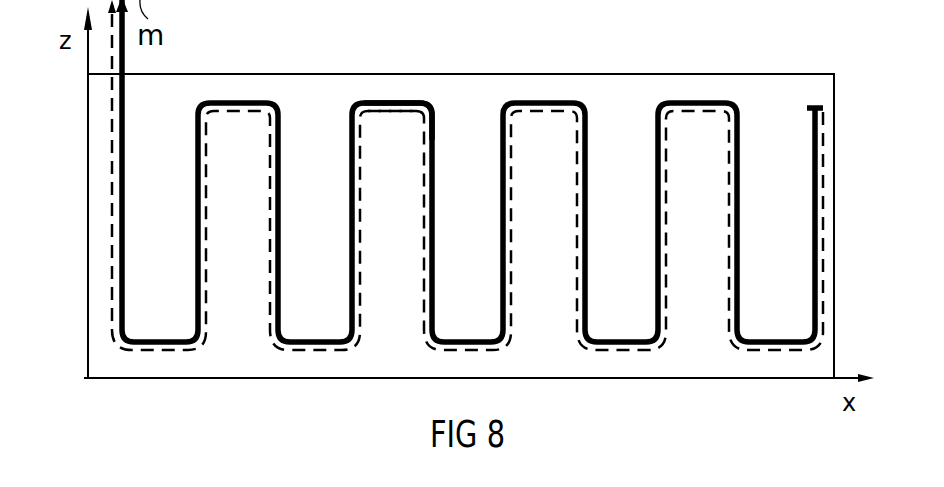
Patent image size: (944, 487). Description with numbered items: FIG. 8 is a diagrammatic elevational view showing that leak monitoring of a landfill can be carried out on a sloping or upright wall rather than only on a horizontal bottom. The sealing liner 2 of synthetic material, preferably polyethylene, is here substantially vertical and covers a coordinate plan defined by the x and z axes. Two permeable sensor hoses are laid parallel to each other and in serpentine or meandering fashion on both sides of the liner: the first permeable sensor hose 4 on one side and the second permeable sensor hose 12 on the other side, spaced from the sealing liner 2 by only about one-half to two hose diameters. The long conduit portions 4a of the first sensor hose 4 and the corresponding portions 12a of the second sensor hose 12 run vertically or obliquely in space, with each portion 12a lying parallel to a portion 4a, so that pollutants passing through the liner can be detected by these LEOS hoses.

The sealing liner 2 is at (597, 100).
The first permeable sensor hose 4 is at (210, 103).
The portions of the first sensor hose 4a is at (432, 110).
The second permeable sensor hose 12 is at (247, 110).
The portions of the second sensor hose 12a is at (398, 107).